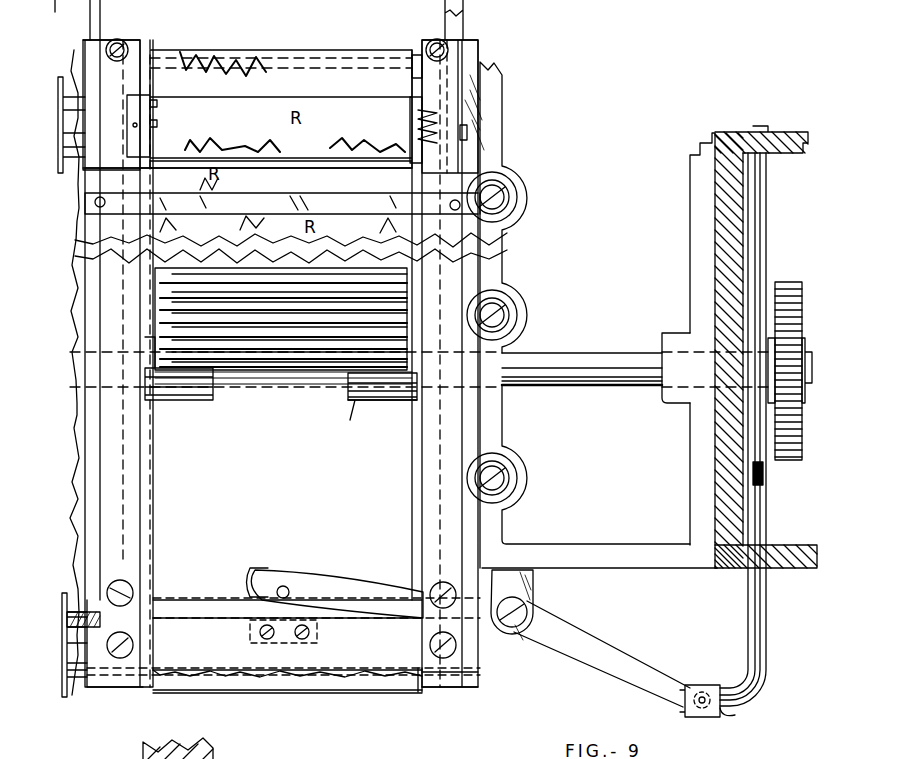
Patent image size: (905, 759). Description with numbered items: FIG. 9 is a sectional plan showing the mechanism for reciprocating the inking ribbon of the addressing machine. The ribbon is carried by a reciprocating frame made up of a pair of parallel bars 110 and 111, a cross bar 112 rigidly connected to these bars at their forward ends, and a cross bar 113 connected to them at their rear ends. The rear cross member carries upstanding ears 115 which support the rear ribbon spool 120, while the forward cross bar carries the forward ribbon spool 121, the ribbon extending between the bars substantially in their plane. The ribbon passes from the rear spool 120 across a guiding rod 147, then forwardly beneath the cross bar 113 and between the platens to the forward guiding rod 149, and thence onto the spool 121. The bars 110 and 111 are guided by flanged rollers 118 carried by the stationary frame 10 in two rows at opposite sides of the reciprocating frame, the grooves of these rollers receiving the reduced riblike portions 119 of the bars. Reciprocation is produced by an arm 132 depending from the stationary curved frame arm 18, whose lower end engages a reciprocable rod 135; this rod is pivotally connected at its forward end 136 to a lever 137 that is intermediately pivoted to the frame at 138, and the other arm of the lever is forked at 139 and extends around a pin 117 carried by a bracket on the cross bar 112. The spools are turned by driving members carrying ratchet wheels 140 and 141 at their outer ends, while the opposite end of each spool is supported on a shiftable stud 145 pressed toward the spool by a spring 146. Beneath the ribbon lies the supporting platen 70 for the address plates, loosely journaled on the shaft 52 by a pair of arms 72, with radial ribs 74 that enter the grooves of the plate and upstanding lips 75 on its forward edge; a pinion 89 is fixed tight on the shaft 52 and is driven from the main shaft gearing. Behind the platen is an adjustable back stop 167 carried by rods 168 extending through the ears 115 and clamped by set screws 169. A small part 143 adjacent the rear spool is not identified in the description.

The frame 10 is at (497, 262).
The curved frame arm 18 is at (796, 153).
The shaft 52 is at (606, 357).
The supporting platen 70 is at (236, 280).
The arms 72 is at (387, 400).
The radial ribs 74 is at (342, 292).
The upstanding lips 75 is at (223, 395).
The pinion 89 is at (790, 282).
The parallel bar 110 is at (110, 672).
The parallel bar 111 is at (452, 687).
The cross bar 112 is at (310, 635).
The cross bar 113 is at (412, 55).
The upstanding ears 115 is at (140, 60).
The pin 117 is at (283, 586).
The flanged rollers 118 is at (517, 200).
The reduced riblike portions 119 is at (140, 480).
The rear ribbon spool 120 is at (281, 141).
The forward ribbon spool 121 is at (240, 708).
The arm 132 is at (765, 478).
The reciprocable rod 135 is at (767, 590).
The forward end of rod 136 is at (702, 688).
The lever 137 is at (620, 645).
The pivot 138 is at (528, 606).
The forked arm 139 is at (250, 588).
The ratchet wheel 140 is at (72, 695).
The ratchet wheel 141 is at (60, 60).
The tab 143 is at (150, 103).
The shiftable stud 145 is at (437, 133).
The spring 146 is at (467, 132).
The guiding rod 147 is at (328, 48).
The forward guiding rod 149 is at (422, 692).
The adjustable back stop 167 is at (282, 204).
The rods 168 is at (463, 19).
The set screws 169 is at (117, 40).